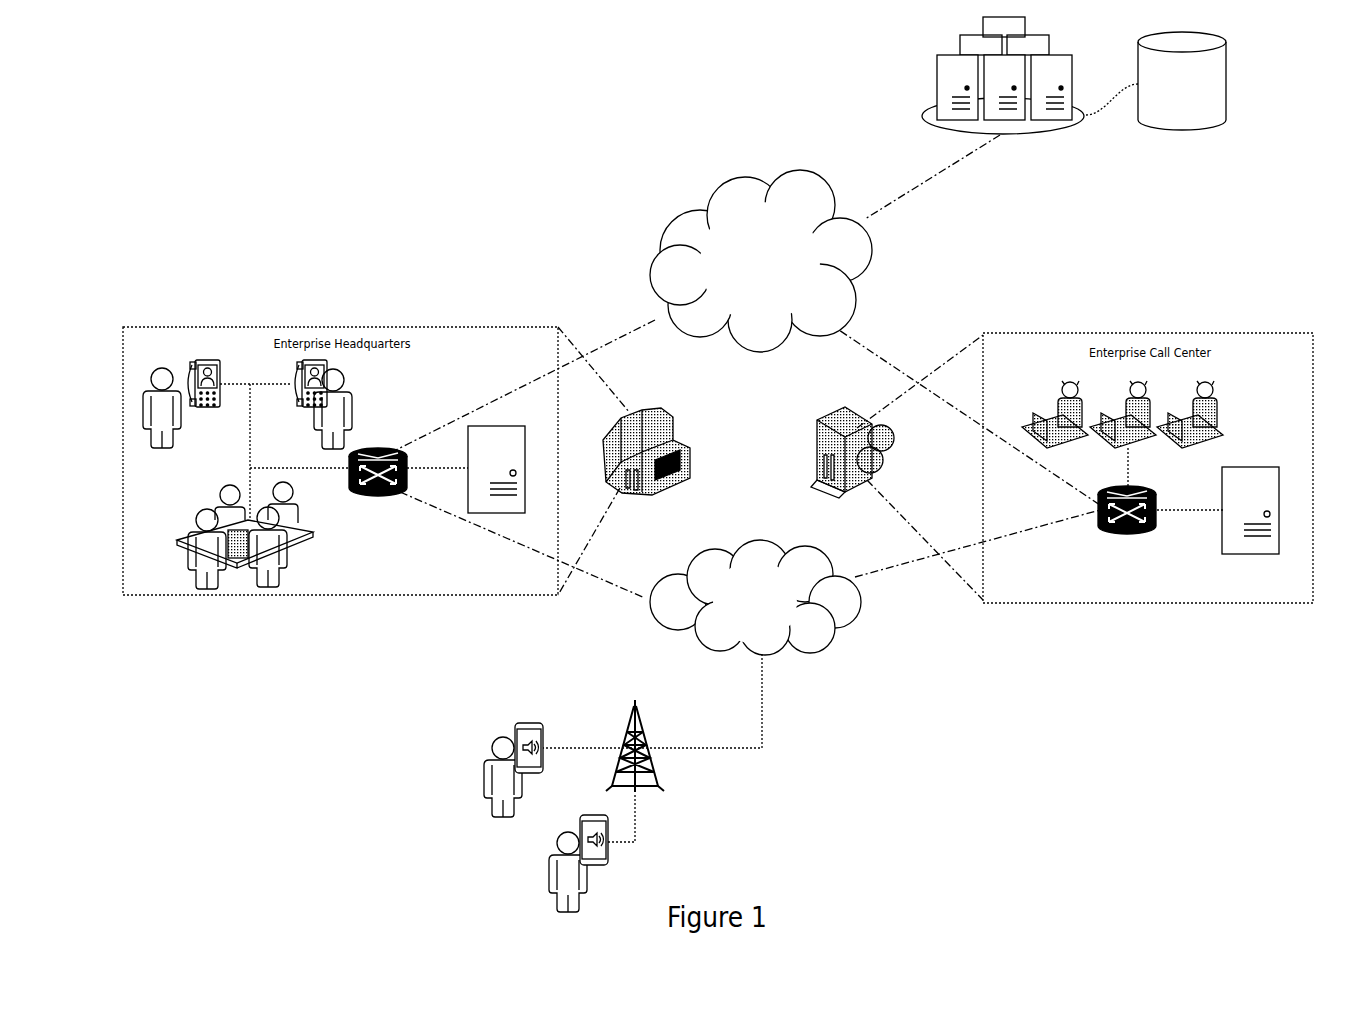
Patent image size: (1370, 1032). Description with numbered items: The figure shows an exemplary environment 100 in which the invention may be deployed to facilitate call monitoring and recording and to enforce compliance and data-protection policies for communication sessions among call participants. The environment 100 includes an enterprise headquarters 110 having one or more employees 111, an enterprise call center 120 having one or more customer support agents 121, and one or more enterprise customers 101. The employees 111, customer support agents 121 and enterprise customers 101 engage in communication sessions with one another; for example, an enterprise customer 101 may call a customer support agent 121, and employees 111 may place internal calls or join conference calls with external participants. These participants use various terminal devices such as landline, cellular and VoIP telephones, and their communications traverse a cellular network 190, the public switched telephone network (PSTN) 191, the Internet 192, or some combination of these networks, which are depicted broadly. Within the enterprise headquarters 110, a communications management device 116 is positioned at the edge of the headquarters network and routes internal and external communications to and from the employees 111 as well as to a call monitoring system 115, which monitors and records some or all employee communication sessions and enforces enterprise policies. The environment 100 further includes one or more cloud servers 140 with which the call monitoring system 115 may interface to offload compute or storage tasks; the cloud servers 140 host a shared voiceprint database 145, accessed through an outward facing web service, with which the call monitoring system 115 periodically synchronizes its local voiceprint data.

The environment 100 is at (297, 817).
The enterprise customers 101 is at (488, 790).
The enterprise headquarters 110 is at (672, 438).
The employees 111 is at (152, 450).
The call monitoring system 115 is at (526, 452).
The communications management device 116 is at (353, 490).
The enterprise call center 120 is at (818, 463).
The customer support agents 121 is at (1225, 413).
The cloud servers 140 is at (926, 120).
The shared voiceprint database 145 is at (1171, 109).
The cellular network 190 is at (618, 763).
The public switched telephone network (PSTN) 191 is at (741, 619).
The Internet 192 is at (751, 284).